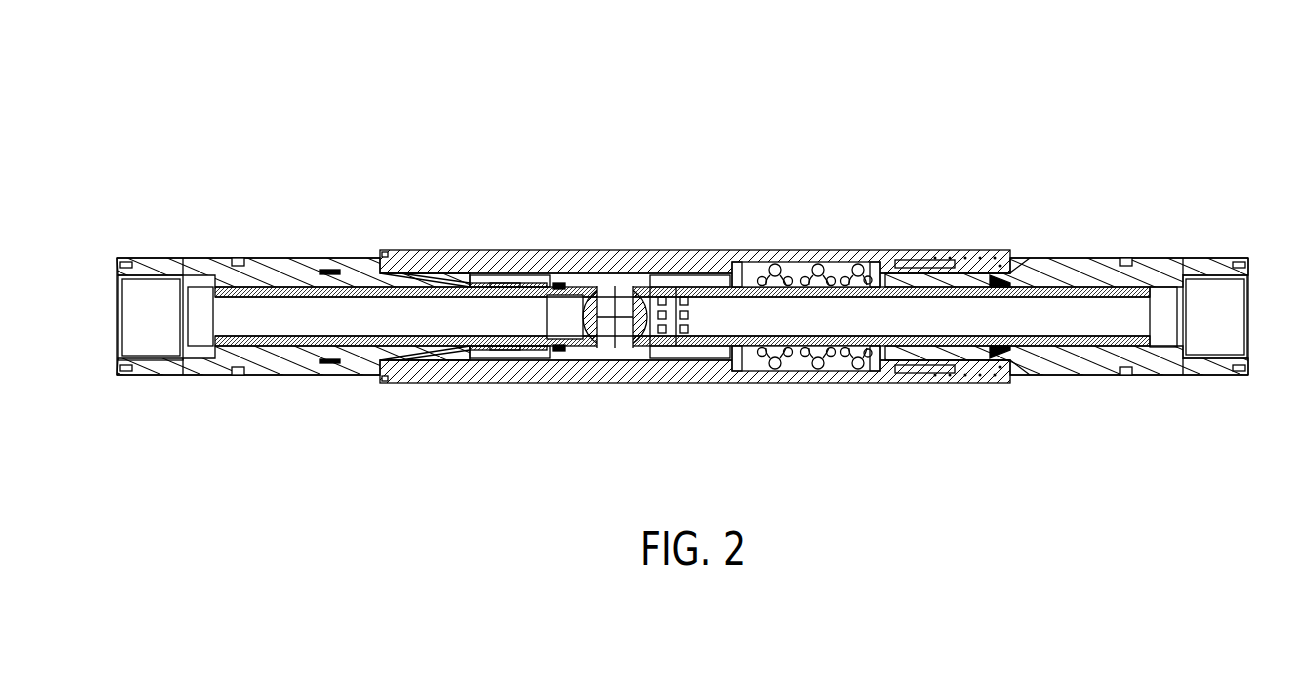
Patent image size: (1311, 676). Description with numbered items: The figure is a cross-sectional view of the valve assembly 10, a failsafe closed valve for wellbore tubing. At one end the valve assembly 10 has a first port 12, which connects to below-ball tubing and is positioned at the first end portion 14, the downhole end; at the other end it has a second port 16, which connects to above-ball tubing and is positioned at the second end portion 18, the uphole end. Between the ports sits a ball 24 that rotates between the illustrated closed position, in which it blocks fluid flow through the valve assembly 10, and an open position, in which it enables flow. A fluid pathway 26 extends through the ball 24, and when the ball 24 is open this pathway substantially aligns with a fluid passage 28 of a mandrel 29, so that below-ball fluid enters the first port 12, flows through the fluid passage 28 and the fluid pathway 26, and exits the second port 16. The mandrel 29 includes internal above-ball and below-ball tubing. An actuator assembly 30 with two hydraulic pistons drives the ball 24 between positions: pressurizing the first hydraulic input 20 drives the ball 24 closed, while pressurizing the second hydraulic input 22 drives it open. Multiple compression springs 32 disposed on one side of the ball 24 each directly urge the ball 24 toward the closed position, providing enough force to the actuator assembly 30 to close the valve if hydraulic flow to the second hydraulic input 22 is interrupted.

The valve assembly 10 is at (432, 99).
The first port 12 is at (1221, 325).
The first end portion 14 is at (1231, 240).
The second port 16 is at (130, 328).
The second end portion 18 is at (115, 250).
The first hydraulic input 20 is at (1022, 268).
The second hydraulic input 22 is at (334, 270).
The ball 24 is at (581, 312).
The fluid pathway 26 is at (636, 311).
The fluid passage 28 is at (854, 297).
The mandrel 29 is at (832, 286).
The actuator assembly 30 is at (514, 230).
The compression springs 32 is at (779, 240).